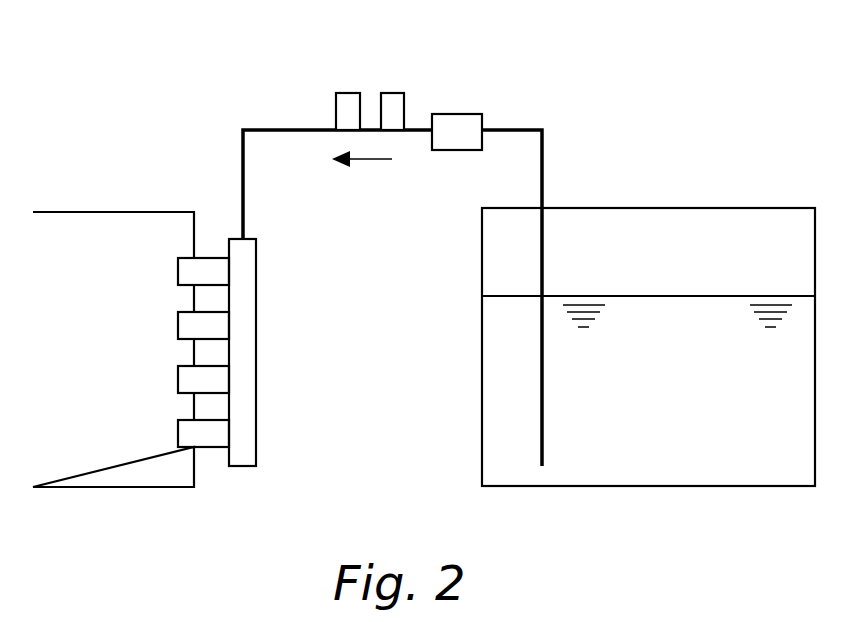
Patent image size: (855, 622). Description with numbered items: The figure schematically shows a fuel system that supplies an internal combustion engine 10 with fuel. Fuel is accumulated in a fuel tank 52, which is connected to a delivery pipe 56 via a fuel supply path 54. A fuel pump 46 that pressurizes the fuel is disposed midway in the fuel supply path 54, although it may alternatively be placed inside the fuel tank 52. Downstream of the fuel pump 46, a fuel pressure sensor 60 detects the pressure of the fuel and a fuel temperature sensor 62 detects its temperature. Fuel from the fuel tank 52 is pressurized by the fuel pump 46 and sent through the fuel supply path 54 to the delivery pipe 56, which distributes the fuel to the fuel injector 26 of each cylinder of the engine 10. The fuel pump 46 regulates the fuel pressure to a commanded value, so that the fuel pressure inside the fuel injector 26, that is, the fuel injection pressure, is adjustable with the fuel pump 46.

The internal combustion engine 10 is at (100, 212).
The fuel injector 26 is at (212, 258).
The delivery pipe 56 is at (256, 340).
The fuel supply path 54 is at (272, 130).
The fuel temperature sensor 62 is at (347, 93).
The fuel pressure sensor 60 is at (392, 93).
The fuel pump 46 is at (444, 114).
The fuel tank 52 is at (732, 208).